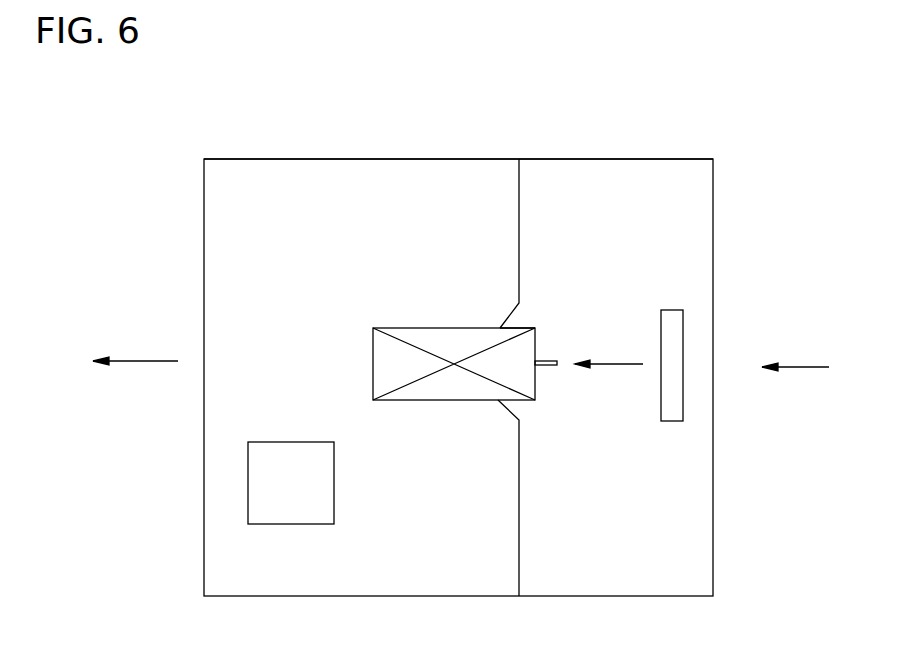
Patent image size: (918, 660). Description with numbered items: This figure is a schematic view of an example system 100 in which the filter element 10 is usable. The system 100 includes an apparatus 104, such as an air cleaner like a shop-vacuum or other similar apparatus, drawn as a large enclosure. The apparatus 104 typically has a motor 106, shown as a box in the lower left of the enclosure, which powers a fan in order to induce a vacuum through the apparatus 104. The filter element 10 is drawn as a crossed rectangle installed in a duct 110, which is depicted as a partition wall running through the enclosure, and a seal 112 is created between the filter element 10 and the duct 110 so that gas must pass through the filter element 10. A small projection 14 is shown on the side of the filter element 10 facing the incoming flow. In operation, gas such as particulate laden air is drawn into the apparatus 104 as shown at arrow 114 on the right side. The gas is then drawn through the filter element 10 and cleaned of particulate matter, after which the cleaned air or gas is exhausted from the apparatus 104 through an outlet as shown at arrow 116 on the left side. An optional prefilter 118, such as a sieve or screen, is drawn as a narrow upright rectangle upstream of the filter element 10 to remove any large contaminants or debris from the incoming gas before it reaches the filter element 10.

The system 100 is at (415, 130).
The apparatus 104 is at (453, 159).
The filter element 10 is at (380, 328).
The connector 14 is at (542, 361).
The motor 106 is at (334, 488).
The duct 110 is at (519, 421).
The seal 112 is at (502, 328).
The arrow 114 is at (802, 367).
The arrow 116 is at (132, 361).
The prefilter 118 is at (672, 421).